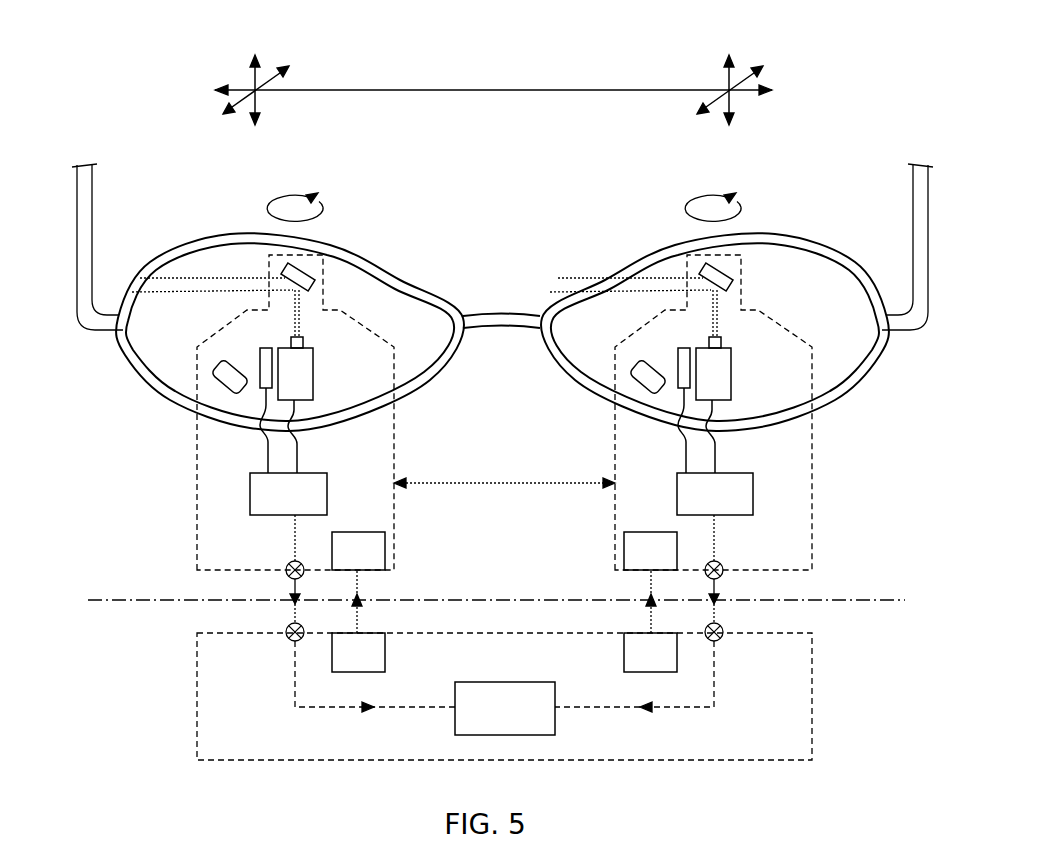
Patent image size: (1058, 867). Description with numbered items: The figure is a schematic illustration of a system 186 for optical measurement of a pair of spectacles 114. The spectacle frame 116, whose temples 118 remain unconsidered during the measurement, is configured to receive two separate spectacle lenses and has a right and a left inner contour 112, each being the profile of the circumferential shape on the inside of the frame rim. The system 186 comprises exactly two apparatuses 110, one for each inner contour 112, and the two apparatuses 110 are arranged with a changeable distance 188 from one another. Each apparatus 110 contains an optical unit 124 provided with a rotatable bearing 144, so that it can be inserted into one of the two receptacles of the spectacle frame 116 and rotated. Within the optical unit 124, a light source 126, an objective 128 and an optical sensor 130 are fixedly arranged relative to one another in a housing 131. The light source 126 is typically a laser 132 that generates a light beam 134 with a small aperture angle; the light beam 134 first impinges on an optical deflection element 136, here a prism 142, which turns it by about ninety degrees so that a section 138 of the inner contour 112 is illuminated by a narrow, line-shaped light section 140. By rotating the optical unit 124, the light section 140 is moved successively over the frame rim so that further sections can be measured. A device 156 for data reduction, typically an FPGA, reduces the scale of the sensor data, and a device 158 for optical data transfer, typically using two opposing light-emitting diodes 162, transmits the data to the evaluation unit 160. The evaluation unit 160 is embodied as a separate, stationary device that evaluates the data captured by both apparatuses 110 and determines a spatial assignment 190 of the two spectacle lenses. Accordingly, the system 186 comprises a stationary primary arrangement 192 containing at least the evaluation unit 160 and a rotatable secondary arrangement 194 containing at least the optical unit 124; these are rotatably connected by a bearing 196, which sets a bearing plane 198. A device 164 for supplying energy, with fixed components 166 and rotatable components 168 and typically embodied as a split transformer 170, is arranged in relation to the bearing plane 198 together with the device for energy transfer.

The apparatus 110 is at (500, 370).
The inner contour 112 is at (500, 370).
The pair of spectacles 114 is at (486, 131).
The spectacle frame 116 is at (582, 135).
The temples 118 is at (84, 196).
The optical unit 124 is at (172, 416).
The light source 126 is at (542, 368).
The objective 128 is at (214, 376).
The optical sensor 130 is at (264, 357).
The housing 131 is at (505, 412).
The laser 132 is at (303, 366).
The light beam 134 is at (302, 300).
The optical deflection element 136 is at (565, 247).
The section 138 is at (143, 280).
The light section 140 is at (213, 284).
The prism 142 is at (306, 272).
The rotatable bearing 144 is at (283, 192).
The device for data reduction 156 is at (272, 504).
The device for optical data transfer 158 is at (504, 578).
The evaluation unit 160 is at (489, 719).
The light-emitting diodes 162 is at (286, 631).
The device for supplying energy 164 is at (504, 602).
The fixed components 166 is at (504, 652).
The rotatable components 168 is at (341, 562).
The split transformer 170 is at (504, 602).
The system 186 is at (160, 688).
The changeable distance 188 is at (504, 515).
The spatial assignment 190 is at (403, 90).
The primary arrangement 192 is at (812, 712).
The secondary arrangement 194 is at (397, 445).
The bearing 196 is at (180, 630).
The bearing plane 198 is at (880, 602).